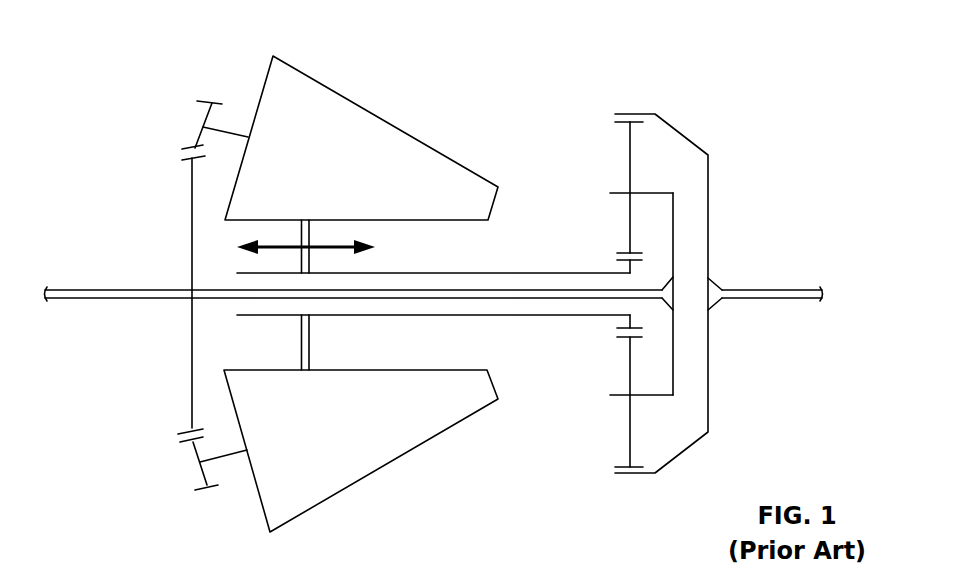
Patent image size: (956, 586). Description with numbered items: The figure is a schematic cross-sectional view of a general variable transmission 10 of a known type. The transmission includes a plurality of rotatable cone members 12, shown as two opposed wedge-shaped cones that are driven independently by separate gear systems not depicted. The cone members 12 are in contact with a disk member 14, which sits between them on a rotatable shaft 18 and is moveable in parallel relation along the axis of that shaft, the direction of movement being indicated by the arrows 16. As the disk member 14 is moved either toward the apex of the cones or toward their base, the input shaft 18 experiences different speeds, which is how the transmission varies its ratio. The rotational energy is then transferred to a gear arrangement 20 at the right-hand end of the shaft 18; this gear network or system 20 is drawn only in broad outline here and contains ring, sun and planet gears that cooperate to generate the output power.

The variable transmission 10 is at (162, 70).
The rotatable cone members 12 is at (374, 128).
The disk member 14 is at (312, 255).
The arrows 16 is at (270, 245).
The rotatable shaft 18 is at (118, 290).
The gear arrangement 20 is at (731, 232).